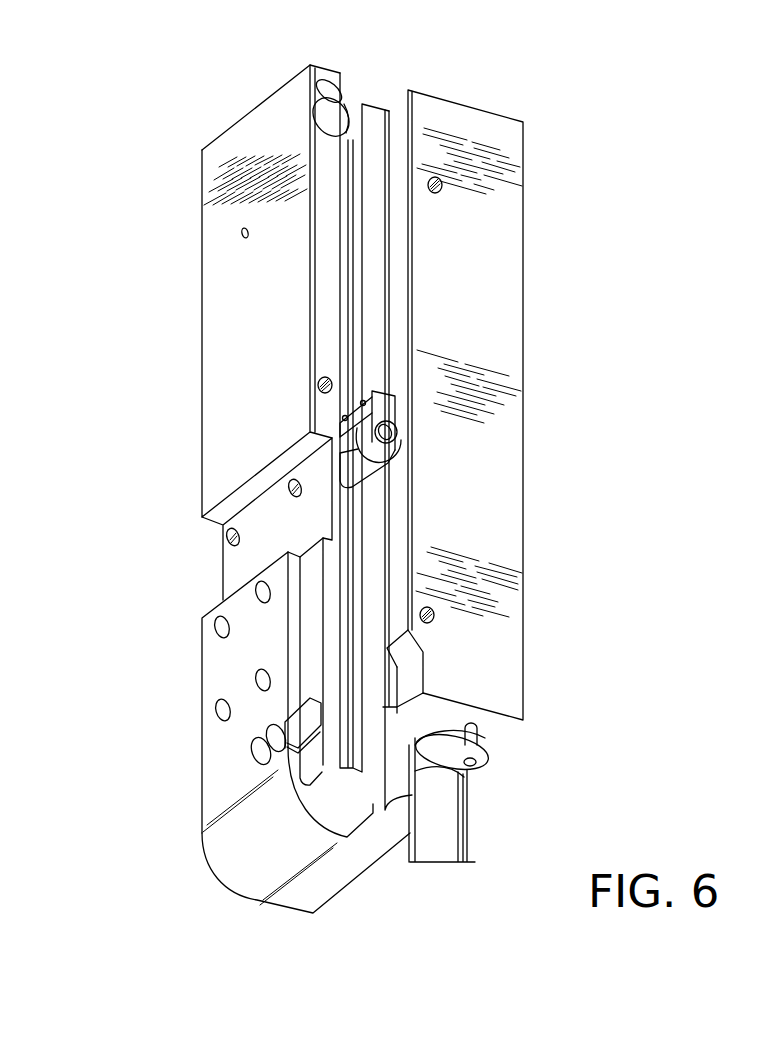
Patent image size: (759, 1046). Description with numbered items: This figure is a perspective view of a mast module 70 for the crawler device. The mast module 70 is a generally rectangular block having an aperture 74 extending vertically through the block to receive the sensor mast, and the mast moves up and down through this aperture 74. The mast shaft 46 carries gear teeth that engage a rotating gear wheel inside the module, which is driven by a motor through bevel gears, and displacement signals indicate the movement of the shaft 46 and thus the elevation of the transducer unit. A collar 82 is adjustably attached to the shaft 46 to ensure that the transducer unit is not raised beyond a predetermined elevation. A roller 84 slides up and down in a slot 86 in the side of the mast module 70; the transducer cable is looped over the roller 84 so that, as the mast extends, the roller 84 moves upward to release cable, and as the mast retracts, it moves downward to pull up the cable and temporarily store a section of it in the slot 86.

The mast module 70 is at (170, 136).
The slot 86 is at (374, 334).
The roller 84 is at (418, 451).
The collar 82 is at (477, 770).
The aperture 74 is at (480, 732).
The shaft 46 is at (468, 830).